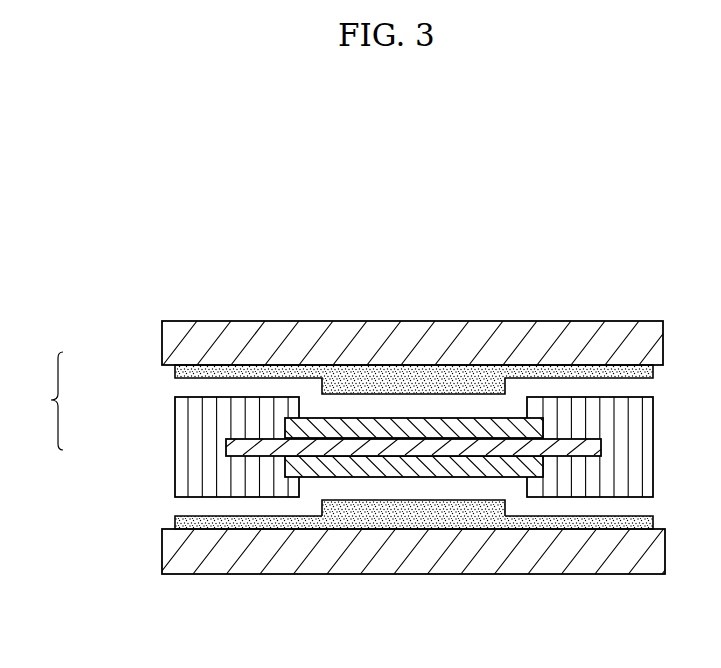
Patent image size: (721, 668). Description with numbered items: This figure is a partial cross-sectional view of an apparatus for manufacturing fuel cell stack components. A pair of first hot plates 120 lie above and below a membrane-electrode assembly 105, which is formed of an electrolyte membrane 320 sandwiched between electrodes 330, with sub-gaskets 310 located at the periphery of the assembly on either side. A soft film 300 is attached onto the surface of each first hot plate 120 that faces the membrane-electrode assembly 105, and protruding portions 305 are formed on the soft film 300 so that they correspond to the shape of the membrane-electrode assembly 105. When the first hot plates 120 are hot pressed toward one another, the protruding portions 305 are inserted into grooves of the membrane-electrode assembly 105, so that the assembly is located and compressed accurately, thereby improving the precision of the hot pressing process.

The first hot plate 120 is at (433, 348).
The membrane-electrode assembly 105 is at (39, 401).
The electrode 330 is at (318, 425).
The electrolyte membrane 320 is at (268, 444).
The sub-gasket 310 is at (190, 432).
The protruding portion 305 is at (340, 513).
The soft film 300 is at (178, 521).